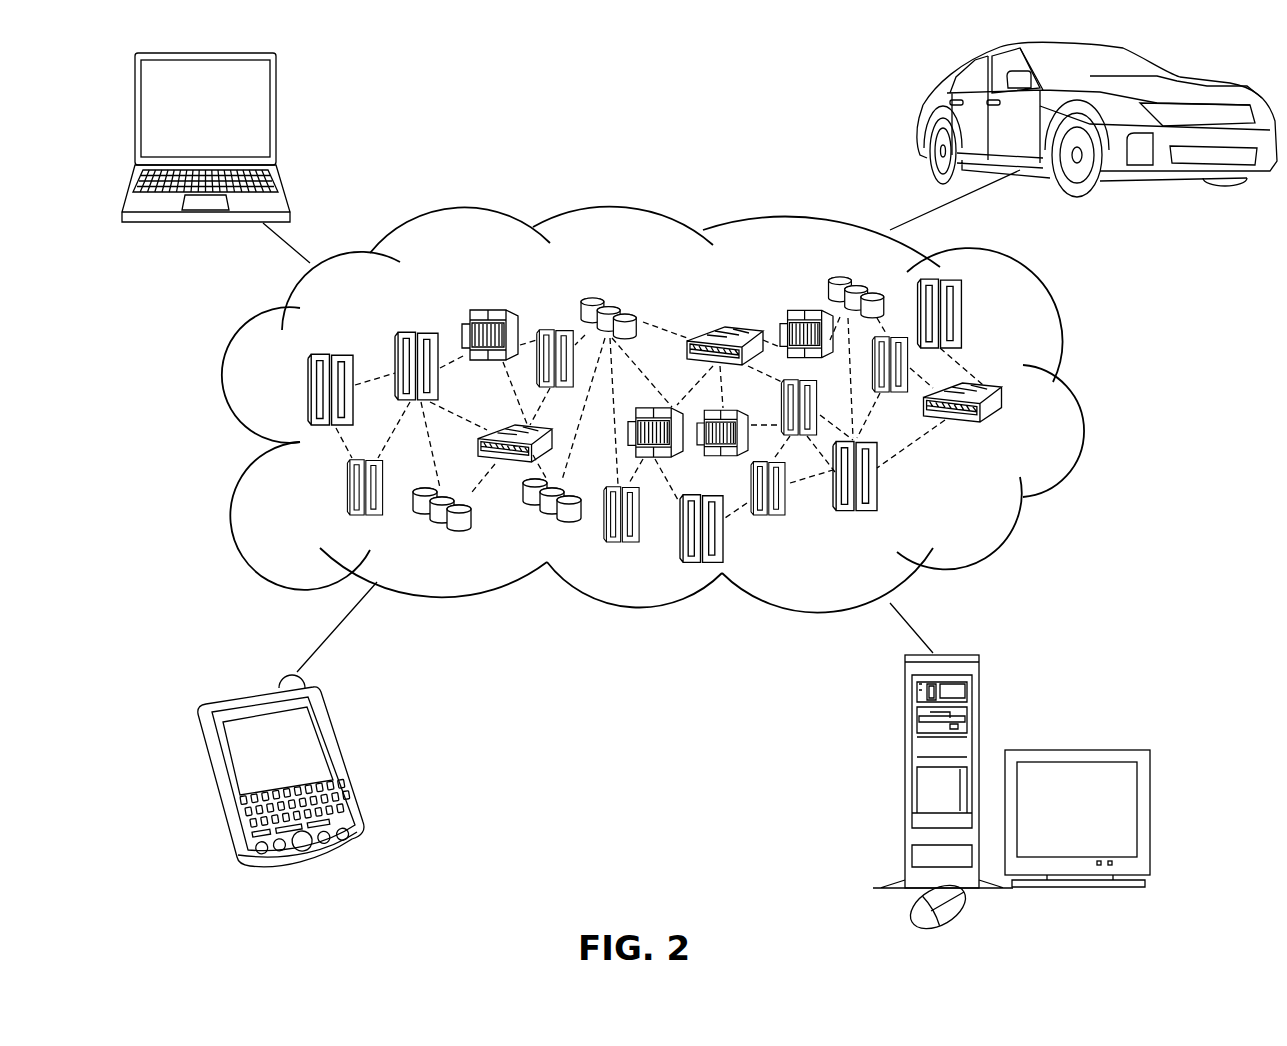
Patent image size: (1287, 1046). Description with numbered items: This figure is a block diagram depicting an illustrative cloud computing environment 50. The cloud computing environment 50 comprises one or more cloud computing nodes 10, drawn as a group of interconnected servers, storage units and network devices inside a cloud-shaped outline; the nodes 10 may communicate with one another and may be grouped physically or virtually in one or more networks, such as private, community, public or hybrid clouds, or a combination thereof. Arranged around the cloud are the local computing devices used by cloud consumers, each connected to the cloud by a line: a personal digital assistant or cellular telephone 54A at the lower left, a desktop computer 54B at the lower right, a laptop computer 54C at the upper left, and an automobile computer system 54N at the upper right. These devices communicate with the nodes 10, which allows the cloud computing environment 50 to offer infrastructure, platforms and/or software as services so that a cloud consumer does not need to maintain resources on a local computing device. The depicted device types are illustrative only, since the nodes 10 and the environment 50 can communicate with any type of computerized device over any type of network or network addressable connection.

The cloud computing node 10 is at (986, 507).
The cloud computing environment 50 is at (1073, 400).
The personal digital assistant (PDA) or cellular telephone 54A is at (333, 730).
The desktop computer 54B is at (905, 717).
The laptop computer 54C is at (277, 92).
The automobile computer system 54N is at (918, 108).